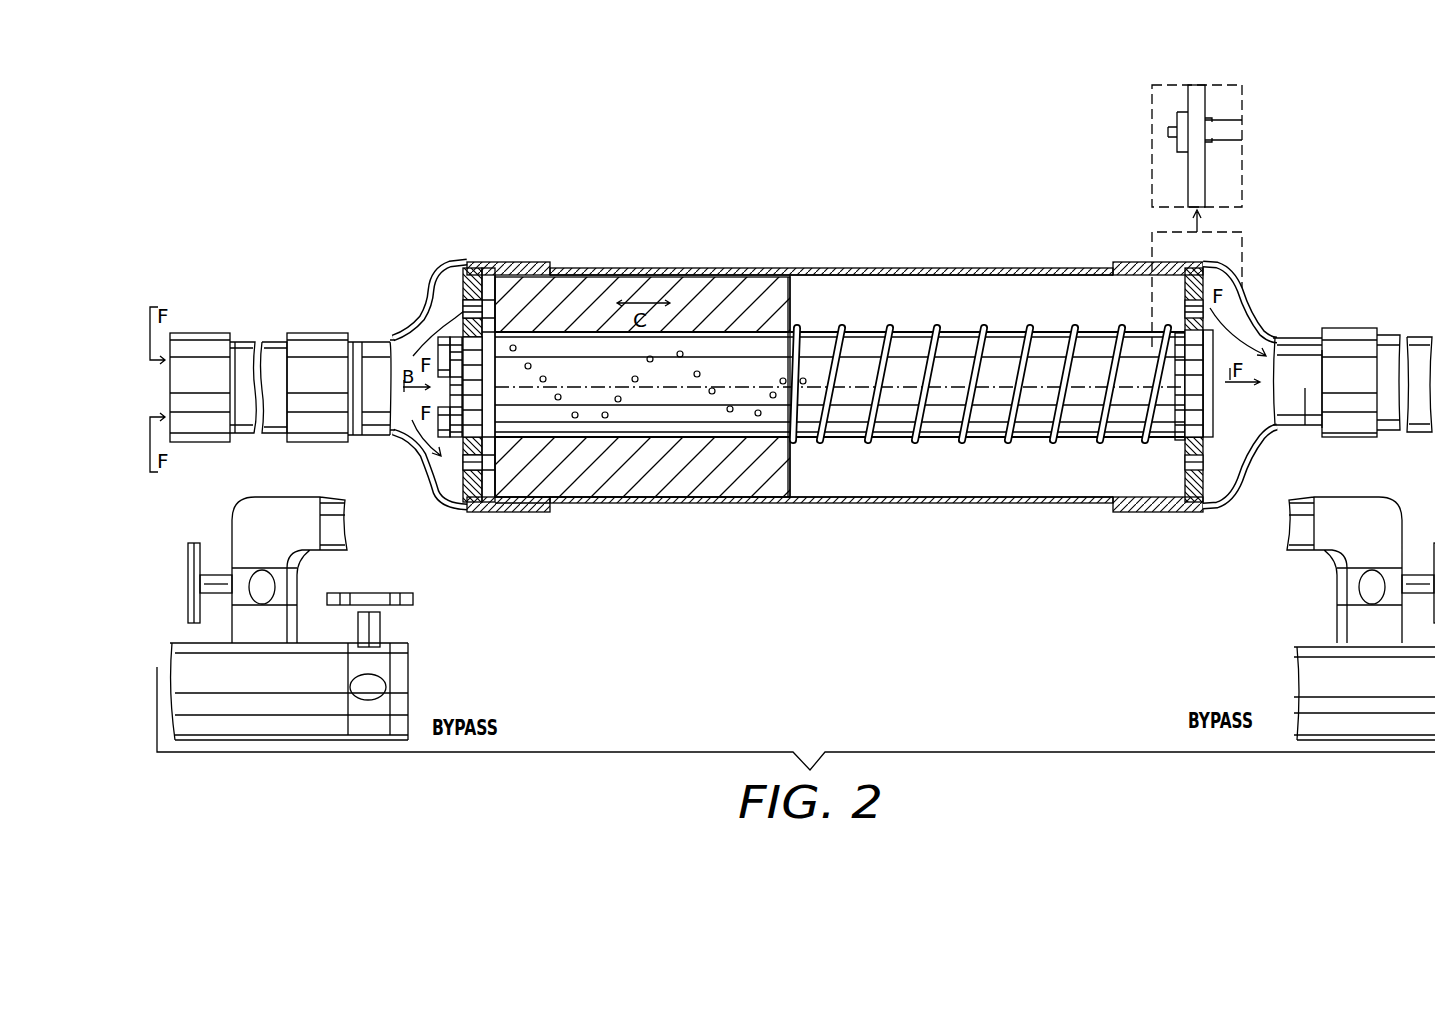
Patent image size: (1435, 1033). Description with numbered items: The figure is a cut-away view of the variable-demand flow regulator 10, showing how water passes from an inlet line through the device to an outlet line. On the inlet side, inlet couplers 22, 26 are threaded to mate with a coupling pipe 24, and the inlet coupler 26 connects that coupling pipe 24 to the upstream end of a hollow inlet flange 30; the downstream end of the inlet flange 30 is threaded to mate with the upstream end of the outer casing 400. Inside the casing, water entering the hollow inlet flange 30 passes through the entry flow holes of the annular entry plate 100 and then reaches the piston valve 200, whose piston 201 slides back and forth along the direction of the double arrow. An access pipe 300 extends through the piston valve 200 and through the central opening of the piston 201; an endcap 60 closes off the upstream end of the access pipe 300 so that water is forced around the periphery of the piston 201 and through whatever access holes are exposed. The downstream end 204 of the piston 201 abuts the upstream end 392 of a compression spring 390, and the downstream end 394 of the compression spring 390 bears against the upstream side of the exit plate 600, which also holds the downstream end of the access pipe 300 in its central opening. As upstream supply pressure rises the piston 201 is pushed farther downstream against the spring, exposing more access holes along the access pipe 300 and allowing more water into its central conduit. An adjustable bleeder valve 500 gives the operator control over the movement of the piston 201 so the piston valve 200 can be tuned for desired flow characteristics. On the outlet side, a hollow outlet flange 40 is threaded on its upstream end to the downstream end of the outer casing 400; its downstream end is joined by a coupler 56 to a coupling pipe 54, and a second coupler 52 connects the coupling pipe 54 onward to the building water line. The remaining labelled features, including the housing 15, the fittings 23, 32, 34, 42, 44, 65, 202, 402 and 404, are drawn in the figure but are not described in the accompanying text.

The variable-demand flow regulator 10 is at (415, 232).
The housing 15 is at (967, 285).
The inlet coupler 22 is at (190, 343).
The inlet coupling 23 is at (165, 445).
The coupling pipe 24 is at (272, 350).
The inlet coupler 26 is at (315, 350).
The hollow inlet flange 30 is at (417, 343).
The inlet pipe 32 is at (358, 433).
The lower inlet ring 34 is at (517, 512).
The hollow outlet flange 40 is at (1245, 330).
The outlet nut 42 is at (1315, 365).
The lower outlet ring 44 is at (1150, 512).
The coupler 52 is at (1415, 432).
The coupling pipe 54 is at (1405, 330).
The coupler 56 is at (1355, 410).
The endcap 60 is at (450, 376).
The lower stop 65 is at (462, 440).
The entry plate 100 is at (477, 270).
The piston valve 200 is at (643, 275).
The piston 201 is at (706, 273).
The lower seal 202 is at (505, 503).
The downstream end 204 is at (800, 500).
The access pipe 300 is at (772, 275).
The compression spring 390 is at (940, 475).
The upstream end 392 is at (800, 340).
The downstream end 394 is at (1167, 440).
The outer casing 400 is at (903, 270).
The upper inlet ring 402 is at (550, 272).
The upper outlet ring 404 is at (1105, 285).
The adjustable bleeder valve 500 is at (1217, 75).
The exit plate 600 is at (1195, 510).